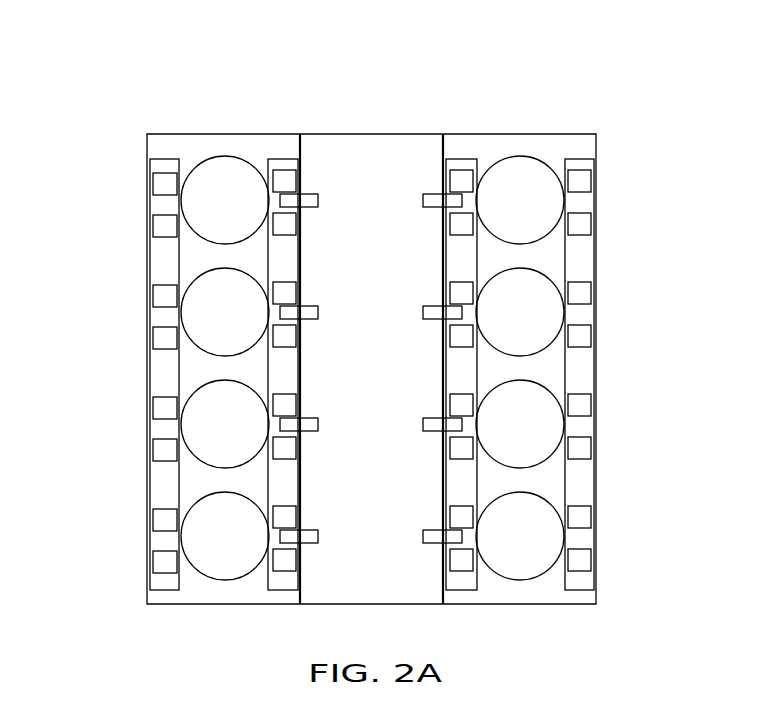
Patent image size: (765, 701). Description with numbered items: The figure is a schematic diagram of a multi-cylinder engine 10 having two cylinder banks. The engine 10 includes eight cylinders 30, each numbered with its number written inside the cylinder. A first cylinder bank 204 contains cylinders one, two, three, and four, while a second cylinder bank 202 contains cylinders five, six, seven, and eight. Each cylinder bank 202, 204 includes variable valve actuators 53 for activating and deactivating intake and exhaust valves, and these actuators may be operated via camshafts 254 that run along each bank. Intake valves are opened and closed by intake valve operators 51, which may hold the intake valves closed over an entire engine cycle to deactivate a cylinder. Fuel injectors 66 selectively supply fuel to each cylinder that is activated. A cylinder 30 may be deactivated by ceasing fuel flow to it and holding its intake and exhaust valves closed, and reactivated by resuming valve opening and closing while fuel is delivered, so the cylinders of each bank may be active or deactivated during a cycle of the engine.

The engine 10 is at (443, 68).
The second cylinder bank 202 is at (230, 75).
The first cylinder bank 204 is at (547, 103).
The camshaft 254 is at (163, 167).
The cylinder 30 is at (155, 208).
The variable exhaust valve operator 53 is at (160, 183).
The intake valve operator 51 is at (290, 180).
The fuel injector 66 is at (310, 206).